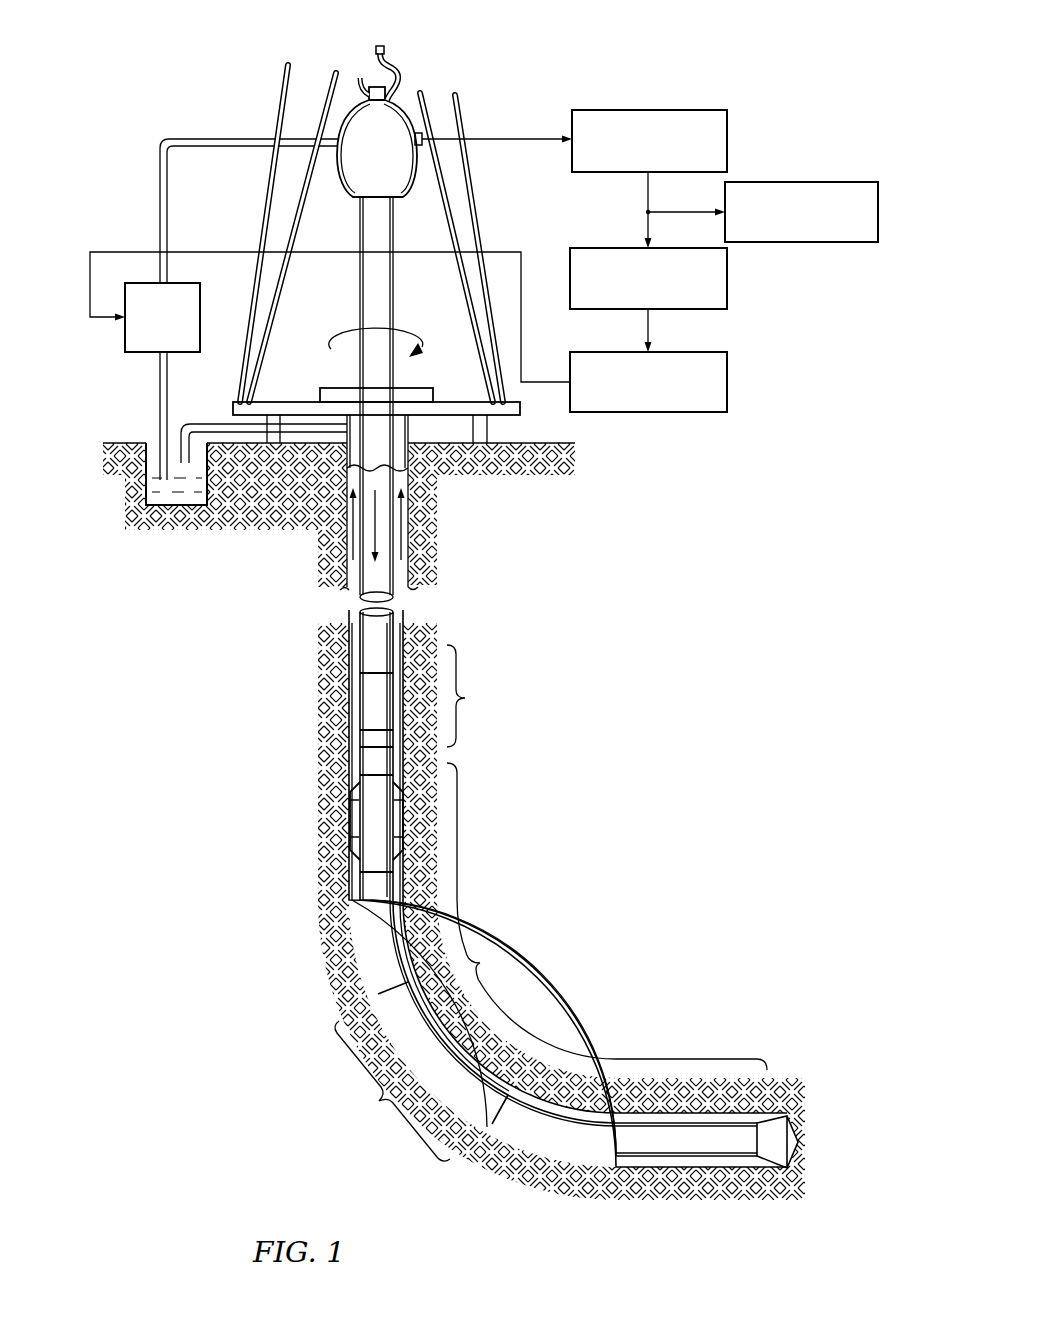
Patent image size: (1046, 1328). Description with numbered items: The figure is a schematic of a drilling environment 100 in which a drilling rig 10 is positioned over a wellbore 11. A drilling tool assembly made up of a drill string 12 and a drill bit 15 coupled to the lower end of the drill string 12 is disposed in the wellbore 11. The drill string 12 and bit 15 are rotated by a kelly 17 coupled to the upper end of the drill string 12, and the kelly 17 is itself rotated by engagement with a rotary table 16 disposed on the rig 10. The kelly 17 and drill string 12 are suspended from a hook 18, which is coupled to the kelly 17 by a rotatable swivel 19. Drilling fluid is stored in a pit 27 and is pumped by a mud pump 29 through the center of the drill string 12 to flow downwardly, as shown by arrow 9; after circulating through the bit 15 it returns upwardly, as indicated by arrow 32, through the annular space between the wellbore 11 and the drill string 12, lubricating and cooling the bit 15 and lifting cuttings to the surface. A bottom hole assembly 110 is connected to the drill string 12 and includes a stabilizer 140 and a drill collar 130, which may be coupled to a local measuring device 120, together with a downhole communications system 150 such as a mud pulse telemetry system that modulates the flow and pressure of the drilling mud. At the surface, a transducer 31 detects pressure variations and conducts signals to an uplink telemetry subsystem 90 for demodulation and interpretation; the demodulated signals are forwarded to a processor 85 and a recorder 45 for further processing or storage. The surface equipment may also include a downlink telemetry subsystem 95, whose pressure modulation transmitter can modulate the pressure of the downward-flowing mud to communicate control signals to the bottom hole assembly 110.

The drilling environment 100 is at (460, 617).
The drilling rig 10 is at (553, 417).
The hook 18 is at (375, 52).
The rotatable swivel 19 is at (365, 183).
The transducer 31 is at (420, 146).
The kelly 17 is at (383, 225).
The mud pump 29 is at (173, 330).
The rotary table 16 is at (415, 393).
The uplink telemetry subsystem 90 is at (660, 151).
The recorder 45 is at (814, 226).
The processor 85 is at (659, 291).
The downlink telemetry subsystem 95 is at (659, 395).
The pit 27 is at (145, 487).
The arrow 9 is at (373, 520).
The arrow 32 is at (402, 537).
The wellbore 11 is at (397, 587).
The drill string 12 is at (348, 651).
The downhole communications system 150 is at (465, 700).
The stabilizer 140 is at (355, 817).
The drill collar 130 is at (372, 910).
The bottom hole assembly 110 is at (475, 968).
The local measuring device 120 is at (379, 1102).
The drill bit 15 is at (785, 1092).